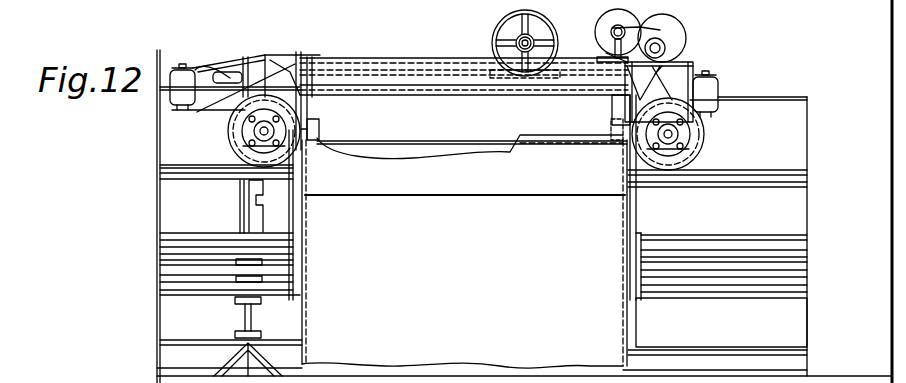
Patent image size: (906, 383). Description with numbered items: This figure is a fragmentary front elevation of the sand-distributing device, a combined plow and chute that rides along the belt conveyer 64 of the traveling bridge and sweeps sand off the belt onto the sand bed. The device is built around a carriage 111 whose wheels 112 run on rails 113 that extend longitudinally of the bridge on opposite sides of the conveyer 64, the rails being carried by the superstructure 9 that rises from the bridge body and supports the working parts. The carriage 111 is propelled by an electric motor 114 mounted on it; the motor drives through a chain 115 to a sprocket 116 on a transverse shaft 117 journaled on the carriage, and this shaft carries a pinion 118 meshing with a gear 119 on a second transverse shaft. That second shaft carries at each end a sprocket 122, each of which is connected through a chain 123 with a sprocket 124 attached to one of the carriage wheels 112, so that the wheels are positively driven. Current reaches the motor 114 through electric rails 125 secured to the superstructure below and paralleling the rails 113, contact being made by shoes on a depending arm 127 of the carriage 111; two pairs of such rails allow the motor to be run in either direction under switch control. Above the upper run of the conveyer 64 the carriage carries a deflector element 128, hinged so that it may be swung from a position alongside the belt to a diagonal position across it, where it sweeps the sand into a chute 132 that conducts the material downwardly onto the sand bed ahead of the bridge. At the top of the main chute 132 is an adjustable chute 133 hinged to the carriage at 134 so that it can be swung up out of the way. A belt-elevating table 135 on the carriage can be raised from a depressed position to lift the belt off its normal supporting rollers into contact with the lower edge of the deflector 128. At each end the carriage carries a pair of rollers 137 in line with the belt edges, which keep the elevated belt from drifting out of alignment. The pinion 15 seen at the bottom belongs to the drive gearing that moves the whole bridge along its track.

The superstructure 9 is at (231, 326).
The pinion 15 is at (524, 375).
The belt conveyer 64 is at (391, 86).
The carriage 111 is at (268, 62).
The wheels 112 is at (230, 136).
The rails 113 is at (160, 163).
The electric motor 114 is at (493, 34).
The chain 115 is at (532, 38).
The sprocket 116 is at (597, 33).
The transverse shaft 117 is at (632, 29).
The pinion 118 is at (611, 37).
The gear 119 is at (688, 42).
The sprocket 122 is at (680, 58).
The chain 123 is at (693, 70).
The sprocket 124 is at (705, 155).
The electric rails 125 is at (725, 292).
The depending arm 127 is at (638, 206).
The deflector element 128 is at (222, 110).
The chute 132 is at (462, 265).
The adjustable chute 133 is at (472, 122).
The hinge 134 is at (320, 126).
The belt-elevating table 135 is at (558, 95).
The rollers 137 is at (174, 68).